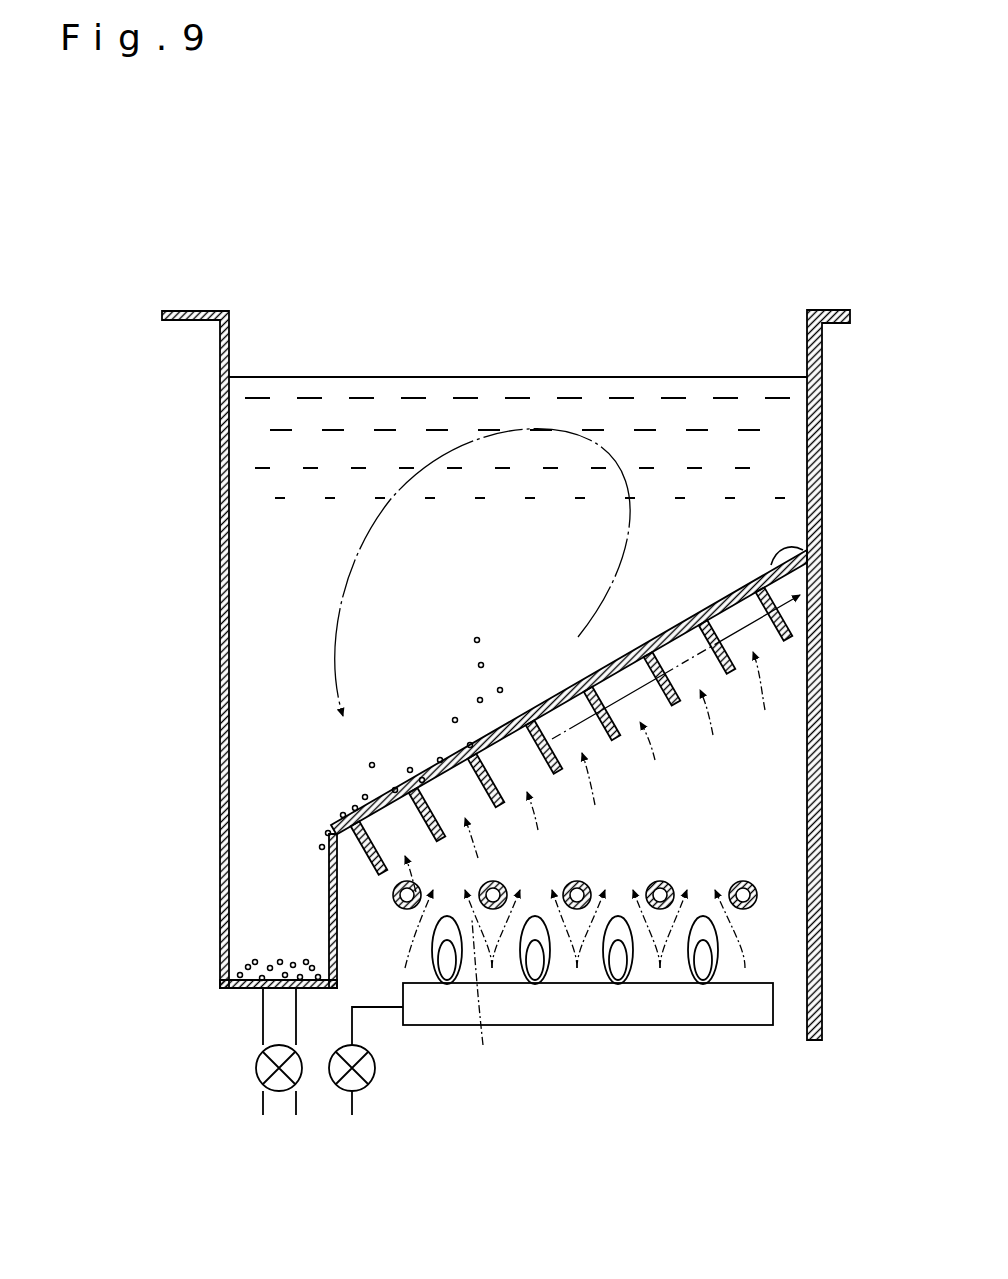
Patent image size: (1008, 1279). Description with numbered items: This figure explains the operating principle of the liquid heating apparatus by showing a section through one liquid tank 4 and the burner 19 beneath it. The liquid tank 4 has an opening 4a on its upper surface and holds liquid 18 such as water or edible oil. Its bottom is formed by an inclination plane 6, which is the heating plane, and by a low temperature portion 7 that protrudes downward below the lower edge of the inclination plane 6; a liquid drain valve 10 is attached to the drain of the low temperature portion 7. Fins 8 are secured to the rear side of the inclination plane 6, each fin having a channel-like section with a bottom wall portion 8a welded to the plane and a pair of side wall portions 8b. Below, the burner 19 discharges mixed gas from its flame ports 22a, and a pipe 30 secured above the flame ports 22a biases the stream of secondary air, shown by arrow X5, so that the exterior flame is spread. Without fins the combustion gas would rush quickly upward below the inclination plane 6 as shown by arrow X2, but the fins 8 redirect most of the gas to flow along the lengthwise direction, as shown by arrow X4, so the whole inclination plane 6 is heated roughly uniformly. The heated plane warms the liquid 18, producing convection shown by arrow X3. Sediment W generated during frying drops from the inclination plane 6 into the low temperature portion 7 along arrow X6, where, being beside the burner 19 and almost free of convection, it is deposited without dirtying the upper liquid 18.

The liquid tank 4 is at (491, 642).
The opening 4a is at (232, 322).
The liquid 18 is at (362, 398).
The inclination plane 6 is at (781, 556).
The low temperature portion 7 is at (242, 934).
The fins 8 is at (611, 706).
The bottom wall portion 8a is at (725, 602).
The side wall portions 8b is at (786, 617).
The sediment W is at (366, 800).
The arrow X2 (combustion gas flow direction) X2 is at (640, 695).
The arrow X3 (convection of liquid) X3 is at (362, 557).
The arrow X4 (combustion gas flow in fins) X4 is at (652, 761).
The arrow X5 (secondary air stream) X5 is at (487, 1004).
The arrow X6 (sediment dropping direction) X6 is at (316, 886).
The pipe 30 is at (400, 908).
The flame ports 22a is at (447, 980).
The burner 19 is at (650, 1028).
The liquid drain valve 10 is at (256, 1067).